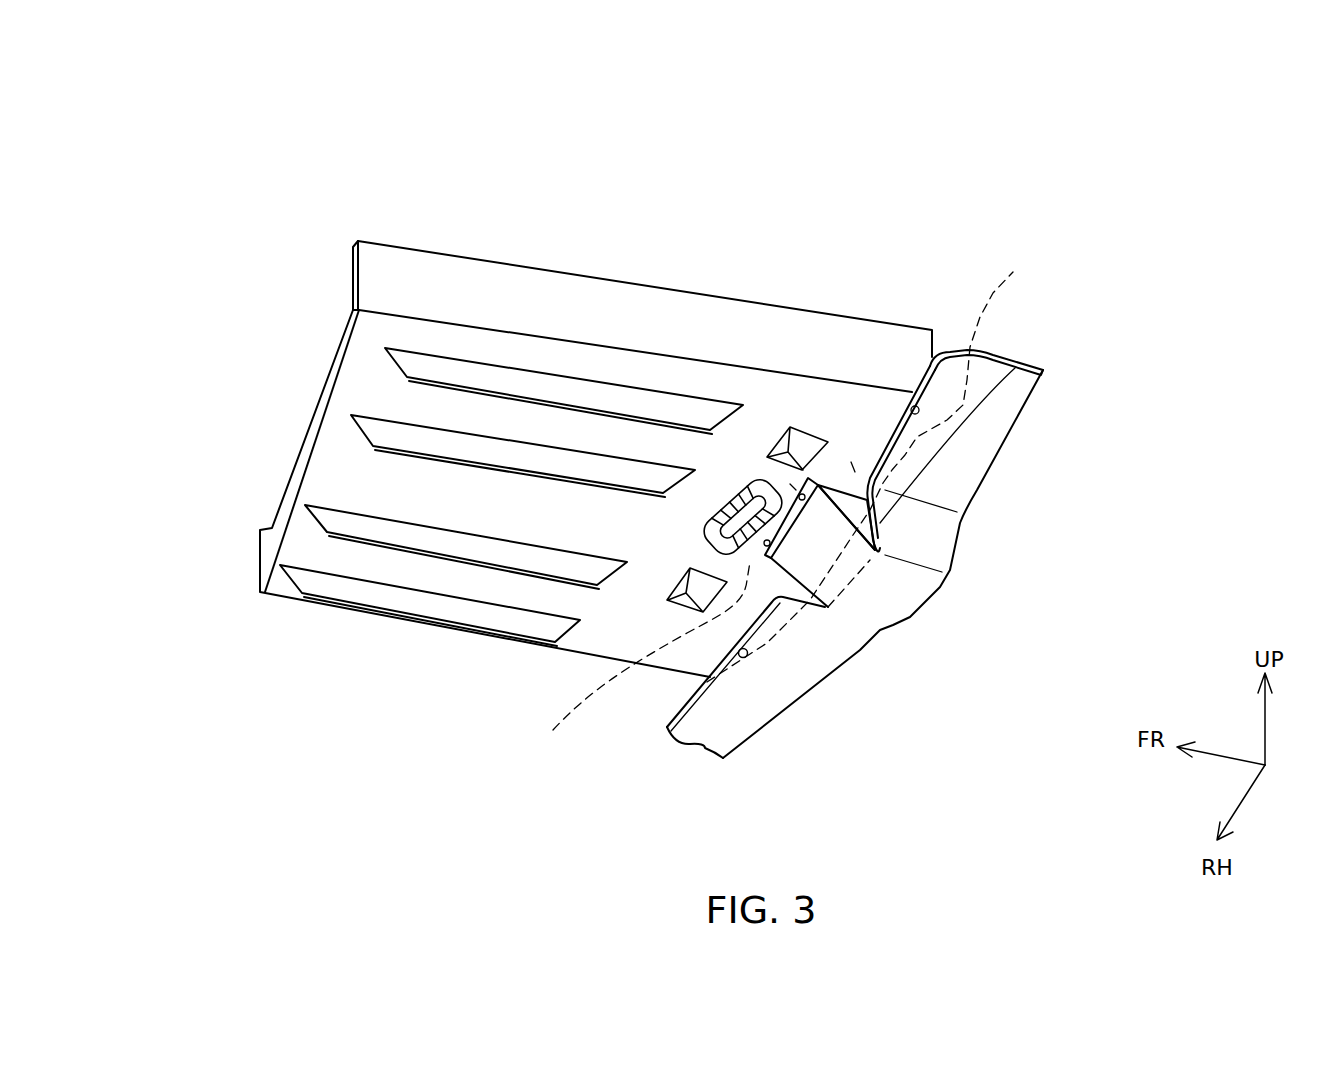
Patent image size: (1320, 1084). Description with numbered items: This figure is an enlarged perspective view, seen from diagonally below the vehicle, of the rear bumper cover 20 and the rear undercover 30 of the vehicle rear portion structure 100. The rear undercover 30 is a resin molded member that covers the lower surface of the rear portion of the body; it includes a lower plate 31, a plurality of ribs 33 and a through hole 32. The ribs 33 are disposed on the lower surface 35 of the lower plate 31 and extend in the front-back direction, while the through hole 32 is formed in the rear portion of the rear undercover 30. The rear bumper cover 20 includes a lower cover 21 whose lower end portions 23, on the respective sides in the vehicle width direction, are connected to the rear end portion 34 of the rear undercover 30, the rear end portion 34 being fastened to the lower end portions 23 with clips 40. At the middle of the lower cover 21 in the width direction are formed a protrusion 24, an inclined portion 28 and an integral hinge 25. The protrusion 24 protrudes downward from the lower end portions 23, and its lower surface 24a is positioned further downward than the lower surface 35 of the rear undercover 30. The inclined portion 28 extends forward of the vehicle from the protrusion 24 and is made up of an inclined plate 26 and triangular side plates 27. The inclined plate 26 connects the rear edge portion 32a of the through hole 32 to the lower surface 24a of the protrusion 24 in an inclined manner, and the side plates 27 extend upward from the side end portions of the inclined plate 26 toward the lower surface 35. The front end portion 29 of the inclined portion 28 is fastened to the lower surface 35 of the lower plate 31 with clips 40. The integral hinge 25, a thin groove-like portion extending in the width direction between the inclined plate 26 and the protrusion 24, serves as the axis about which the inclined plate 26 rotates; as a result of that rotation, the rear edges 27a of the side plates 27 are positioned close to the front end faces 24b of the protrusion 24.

The vehicle rear portion structure 100 is at (1163, 202).
The rear bumper cover 20 is at (1072, 393).
The lower cover 21 is at (1027, 417).
The lower end portions 23 is at (985, 447).
The protrusion 24 is at (897, 593).
The lower surface of the protrusion 24a is at (746, 664).
The front end faces of the protrusion 24b is at (885, 535).
The integral hinge 25 is at (848, 557).
The inclined plate 26 is at (808, 478).
The side plates 27 is at (847, 480).
The rear edges of the side plates 27a is at (960, 433).
The inclined portion 28 is at (865, 192).
The front end portion of the inclined portion 29 is at (853, 467).
The rear undercover 30 is at (281, 470).
The lower plate 31 is at (355, 377).
The through hole 32 is at (742, 552).
The rear edge portion of the through hole 32a is at (637, 661).
The ribs 33 is at (403, 553).
The rear end portion of the rear undercover 34 is at (875, 464).
The lower surface of the lower plate 35 is at (793, 487).
The clips 40 is at (743, 658).